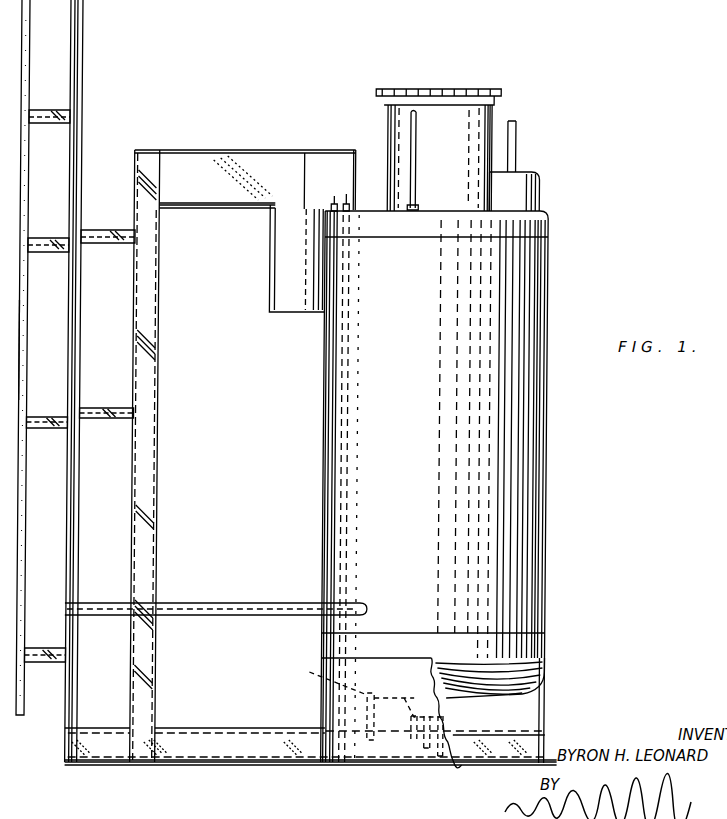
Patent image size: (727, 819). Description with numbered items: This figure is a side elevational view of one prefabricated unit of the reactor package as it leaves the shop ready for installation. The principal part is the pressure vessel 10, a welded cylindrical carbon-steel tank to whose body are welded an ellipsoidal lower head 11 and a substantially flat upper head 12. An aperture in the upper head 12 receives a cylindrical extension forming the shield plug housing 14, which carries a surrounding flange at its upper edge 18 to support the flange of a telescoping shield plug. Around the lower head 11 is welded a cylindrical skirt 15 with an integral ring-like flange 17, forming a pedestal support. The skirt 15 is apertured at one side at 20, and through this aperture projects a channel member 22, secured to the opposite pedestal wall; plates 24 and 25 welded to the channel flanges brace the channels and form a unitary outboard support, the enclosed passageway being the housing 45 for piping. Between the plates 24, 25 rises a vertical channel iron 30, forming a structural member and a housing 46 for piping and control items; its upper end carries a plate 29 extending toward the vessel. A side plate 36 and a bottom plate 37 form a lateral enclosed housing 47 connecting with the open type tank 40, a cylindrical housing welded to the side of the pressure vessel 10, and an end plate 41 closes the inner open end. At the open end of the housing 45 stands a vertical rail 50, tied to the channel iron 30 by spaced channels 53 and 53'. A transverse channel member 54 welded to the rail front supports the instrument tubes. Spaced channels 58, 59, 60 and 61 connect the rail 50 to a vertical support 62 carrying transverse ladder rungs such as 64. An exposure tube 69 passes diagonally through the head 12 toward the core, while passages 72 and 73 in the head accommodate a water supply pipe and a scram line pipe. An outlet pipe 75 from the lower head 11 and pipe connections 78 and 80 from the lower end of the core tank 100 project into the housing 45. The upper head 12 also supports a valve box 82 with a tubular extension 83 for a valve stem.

The pressure vessel 10 is at (561, 447).
The lower head 11 is at (546, 648).
The upper head 12 is at (551, 228).
The shield plug housing 14 is at (388, 122).
The cylindrical skirt 15 is at (549, 688).
The ring-like flange 17 is at (356, 764).
The upper edge flange 18 is at (500, 97).
The aperture 20 is at (322, 724).
The channel member 22 is at (240, 754).
The plate 24 is at (106, 727).
The plate 25 is at (237, 727).
The plate 29 is at (250, 149).
The channel iron 30 is at (156, 508).
The side plate 36 is at (224, 195).
The bottom plate 37 is at (218, 209).
The open type tank 40 is at (290, 258).
The end plate 41 is at (354, 174).
The housing 45 is at (201, 733).
The housing 46 is at (157, 433).
The housing 47 is at (197, 159).
The vertical rail 50 is at (83, 513).
The channel 53 is at (106, 428).
The channel 53' is at (108, 251).
The channel member 54 is at (70, 612).
The spaced channel 58 is at (40, 663).
The spaced channel 59 is at (64, 429).
The spaced channel 60 is at (60, 253).
The spaced channel 61 is at (62, 122).
The vertical support 62 is at (24, 536).
The ladder rung 64 is at (27, 350).
The exposure tube 69 is at (417, 150).
The passage 72 is at (348, 194).
The passage 73 is at (336, 196).
The outlet pipe 75 is at (378, 692).
The pipe connection 78 is at (412, 764).
The pipe connection 80 is at (458, 764).
The valve box 82 is at (542, 180).
The tubular extension 83 is at (518, 142).
The core tank 100 is at (405, 697).